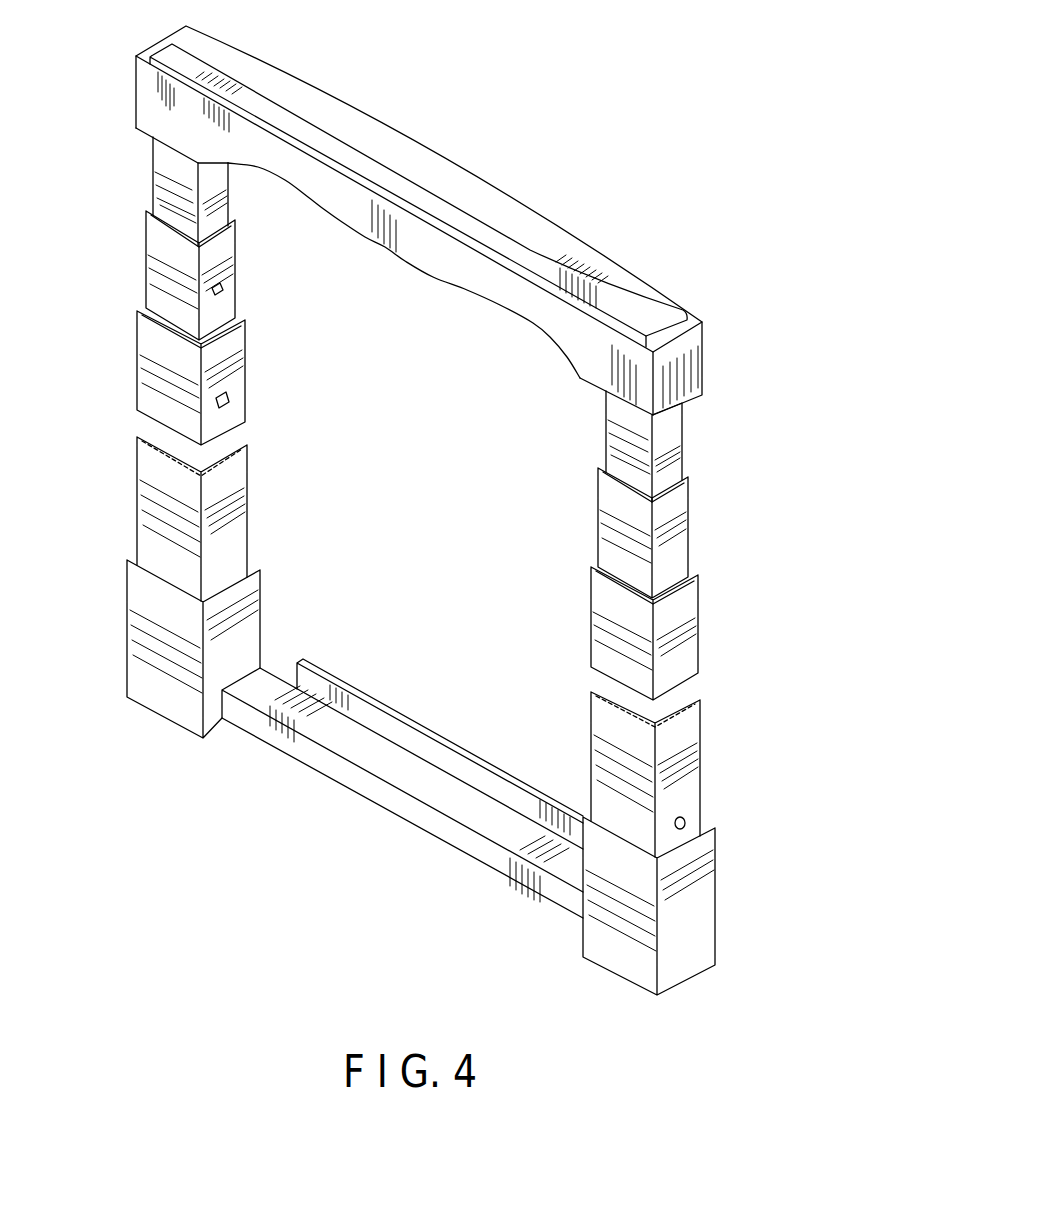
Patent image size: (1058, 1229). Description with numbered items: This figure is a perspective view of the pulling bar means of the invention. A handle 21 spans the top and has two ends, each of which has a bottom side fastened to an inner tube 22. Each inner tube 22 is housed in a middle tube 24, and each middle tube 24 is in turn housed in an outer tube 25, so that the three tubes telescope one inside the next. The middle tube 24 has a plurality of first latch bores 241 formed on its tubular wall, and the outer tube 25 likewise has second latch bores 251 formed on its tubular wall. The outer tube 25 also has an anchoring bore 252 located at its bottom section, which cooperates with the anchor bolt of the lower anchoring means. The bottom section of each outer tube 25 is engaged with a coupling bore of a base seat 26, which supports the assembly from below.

The handle 21 is at (134, 84).
The inner tube 22 is at (150, 175).
The middle tube 24 is at (408, 404).
The first latch bores 241 is at (223, 285).
The outer tube 25 is at (463, 574).
The second latch bores 251 is at (229, 398).
The anchoring bore 252 is at (686, 822).
The base seat 26 is at (421, 753).